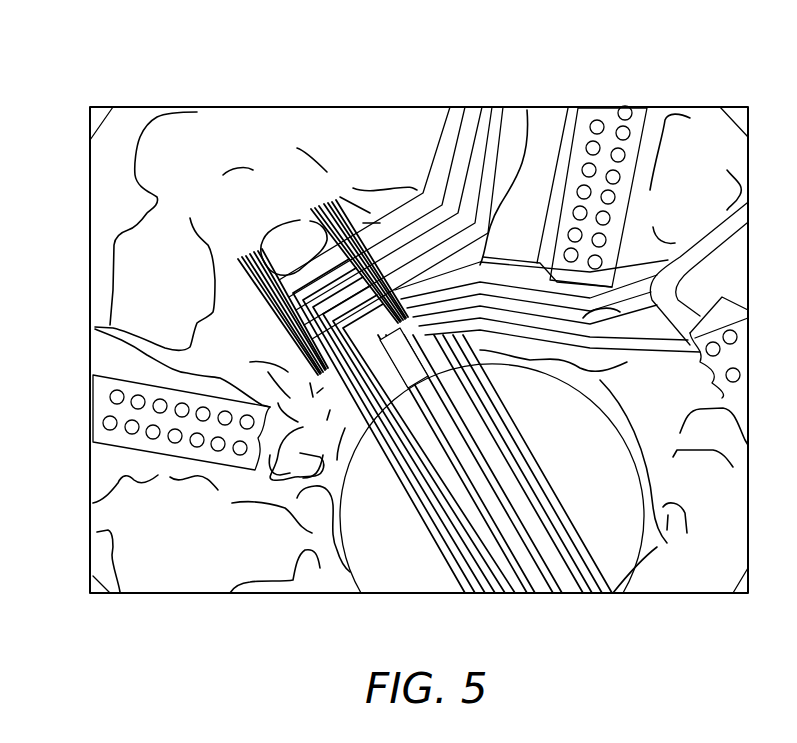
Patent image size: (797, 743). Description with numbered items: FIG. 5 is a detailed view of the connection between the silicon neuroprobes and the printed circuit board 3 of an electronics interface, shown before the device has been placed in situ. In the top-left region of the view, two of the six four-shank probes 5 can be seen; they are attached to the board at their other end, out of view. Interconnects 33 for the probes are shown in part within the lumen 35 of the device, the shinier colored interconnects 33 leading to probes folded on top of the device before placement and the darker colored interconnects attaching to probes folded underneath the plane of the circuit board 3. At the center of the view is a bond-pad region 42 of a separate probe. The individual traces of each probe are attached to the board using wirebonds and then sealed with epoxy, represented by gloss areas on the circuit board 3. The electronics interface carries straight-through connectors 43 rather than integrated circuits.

The printed circuit board 3 is at (350, 125).
The four-shank probes 5 is at (245, 255).
The interconnects 33 is at (480, 593).
The lumen 35 is at (620, 548).
The bond-pad region 42 is at (416, 335).
The straight-through connectors 43 is at (102, 408).